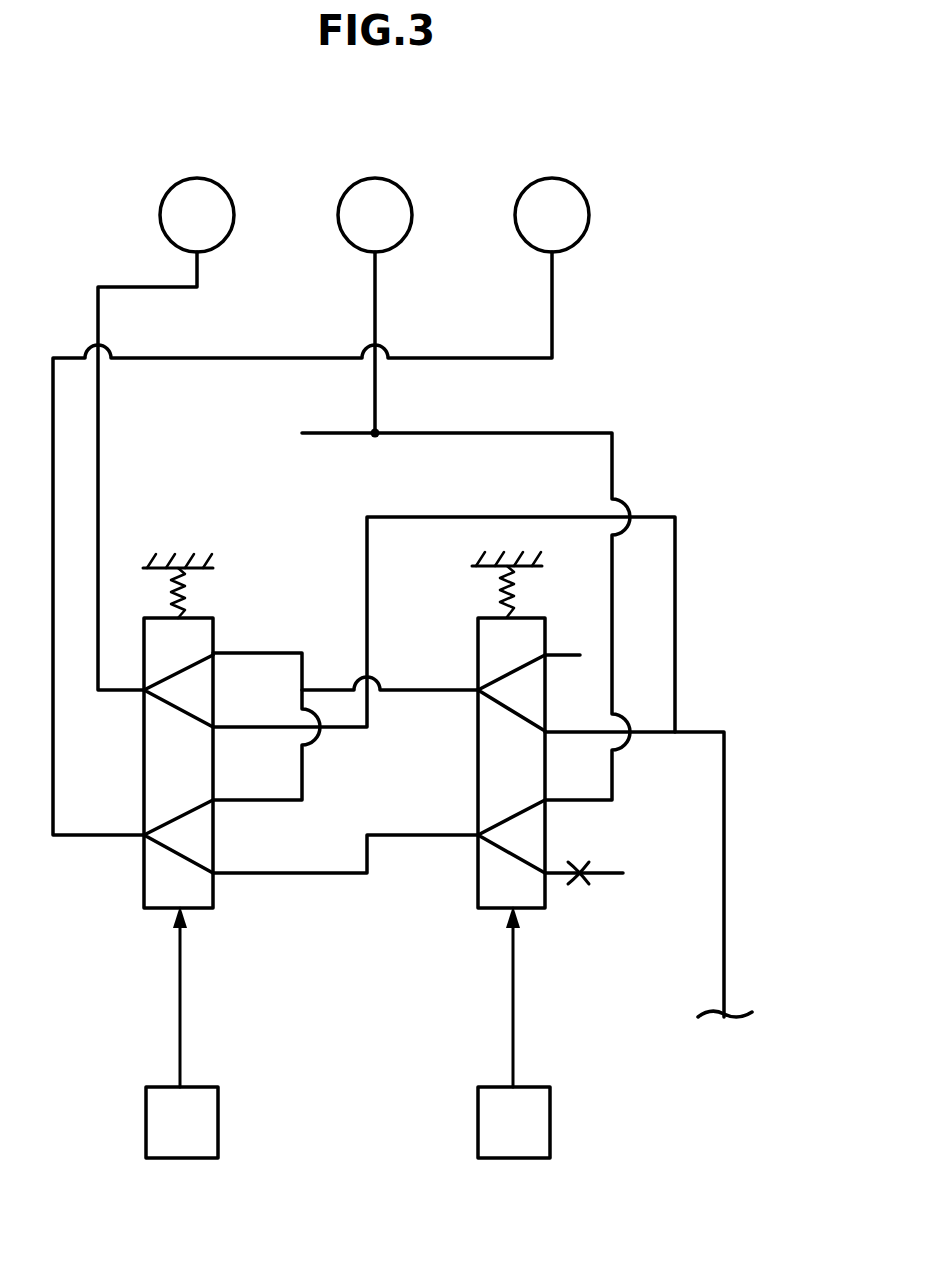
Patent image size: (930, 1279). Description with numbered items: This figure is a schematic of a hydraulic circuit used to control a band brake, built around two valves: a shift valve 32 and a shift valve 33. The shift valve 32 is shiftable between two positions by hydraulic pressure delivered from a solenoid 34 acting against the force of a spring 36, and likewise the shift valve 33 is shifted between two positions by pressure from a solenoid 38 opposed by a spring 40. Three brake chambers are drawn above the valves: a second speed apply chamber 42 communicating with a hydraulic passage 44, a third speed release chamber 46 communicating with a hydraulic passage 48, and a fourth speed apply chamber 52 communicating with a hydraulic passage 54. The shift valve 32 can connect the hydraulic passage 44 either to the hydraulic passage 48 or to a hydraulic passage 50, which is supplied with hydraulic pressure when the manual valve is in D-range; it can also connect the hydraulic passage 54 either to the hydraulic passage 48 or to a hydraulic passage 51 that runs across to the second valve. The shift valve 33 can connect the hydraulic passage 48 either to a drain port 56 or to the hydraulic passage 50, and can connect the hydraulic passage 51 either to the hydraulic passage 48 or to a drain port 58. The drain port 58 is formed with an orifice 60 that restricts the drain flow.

The shift valve 32 is at (138, 908).
The shift valve 33 is at (470, 908).
The solenoid 34 is at (146, 1125).
The spring 36 is at (186, 592).
The solenoid 38 is at (550, 1120).
The spring 40 is at (515, 588).
The second speed apply chamber 42 is at (198, 178).
The hydraulic passage 44 is at (118, 692).
The third speed release chamber 46 is at (378, 178).
The hydraulic passage 48 is at (265, 653).
The hydraulic passage 50 is at (250, 727).
The hydraulic passage 51 is at (280, 877).
The fourth speed apply chamber 52 is at (554, 178).
The hydraulic passage 54 is at (80, 838).
The drain port 56 is at (568, 655).
The drain port 58 is at (610, 871).
The orifice 60 is at (582, 880).